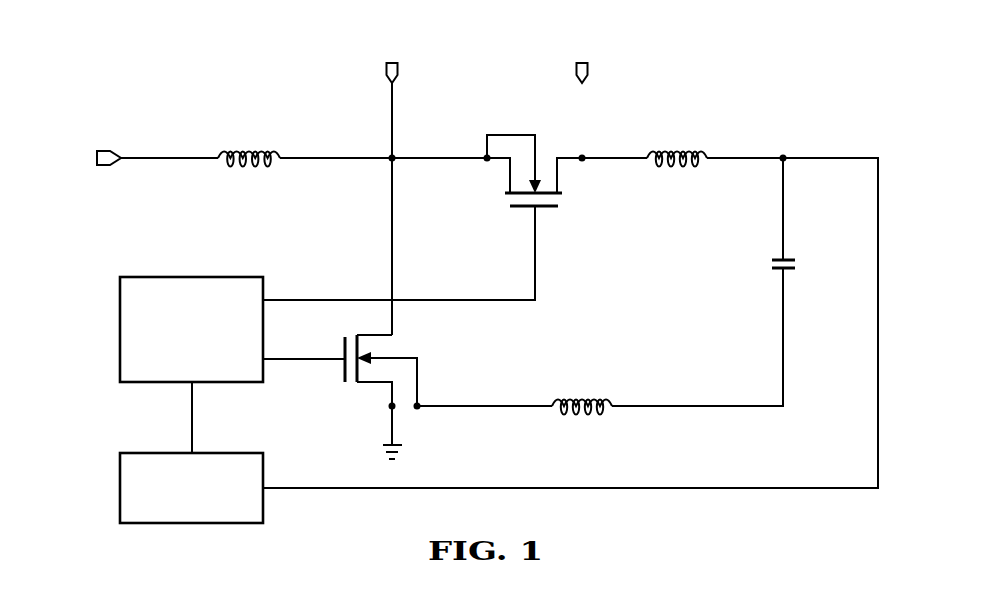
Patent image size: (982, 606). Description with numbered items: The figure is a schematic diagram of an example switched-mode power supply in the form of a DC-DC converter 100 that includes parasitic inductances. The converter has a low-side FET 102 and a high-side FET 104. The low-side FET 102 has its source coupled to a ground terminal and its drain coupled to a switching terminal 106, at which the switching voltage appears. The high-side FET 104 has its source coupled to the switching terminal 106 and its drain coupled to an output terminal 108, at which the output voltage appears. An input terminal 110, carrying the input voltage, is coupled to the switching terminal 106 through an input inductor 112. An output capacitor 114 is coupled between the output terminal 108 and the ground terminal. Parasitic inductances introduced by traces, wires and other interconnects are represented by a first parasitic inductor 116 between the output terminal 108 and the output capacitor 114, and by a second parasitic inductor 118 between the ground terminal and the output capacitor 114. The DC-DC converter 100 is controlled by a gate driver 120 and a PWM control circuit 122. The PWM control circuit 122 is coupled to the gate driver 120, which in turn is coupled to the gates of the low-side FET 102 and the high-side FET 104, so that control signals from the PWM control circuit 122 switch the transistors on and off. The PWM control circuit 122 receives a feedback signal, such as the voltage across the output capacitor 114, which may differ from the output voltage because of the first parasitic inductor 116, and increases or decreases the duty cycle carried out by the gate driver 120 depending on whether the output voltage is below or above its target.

The DC-DC converter 100 is at (140, 72).
The low-side FET 102 is at (338, 375).
The high-side FET 104 is at (520, 212).
The switching terminal 106 is at (395, 148).
The output terminal 108 is at (585, 148).
The input terminal 110 is at (105, 149).
The input inductor 112 is at (228, 146).
The output capacitor 114 is at (798, 264).
The first parasitic inductor 116 is at (680, 166).
The second parasitic inductor 118 is at (587, 413).
The gate driver 120 is at (120, 330).
The PWM control circuit 122 is at (120, 500).